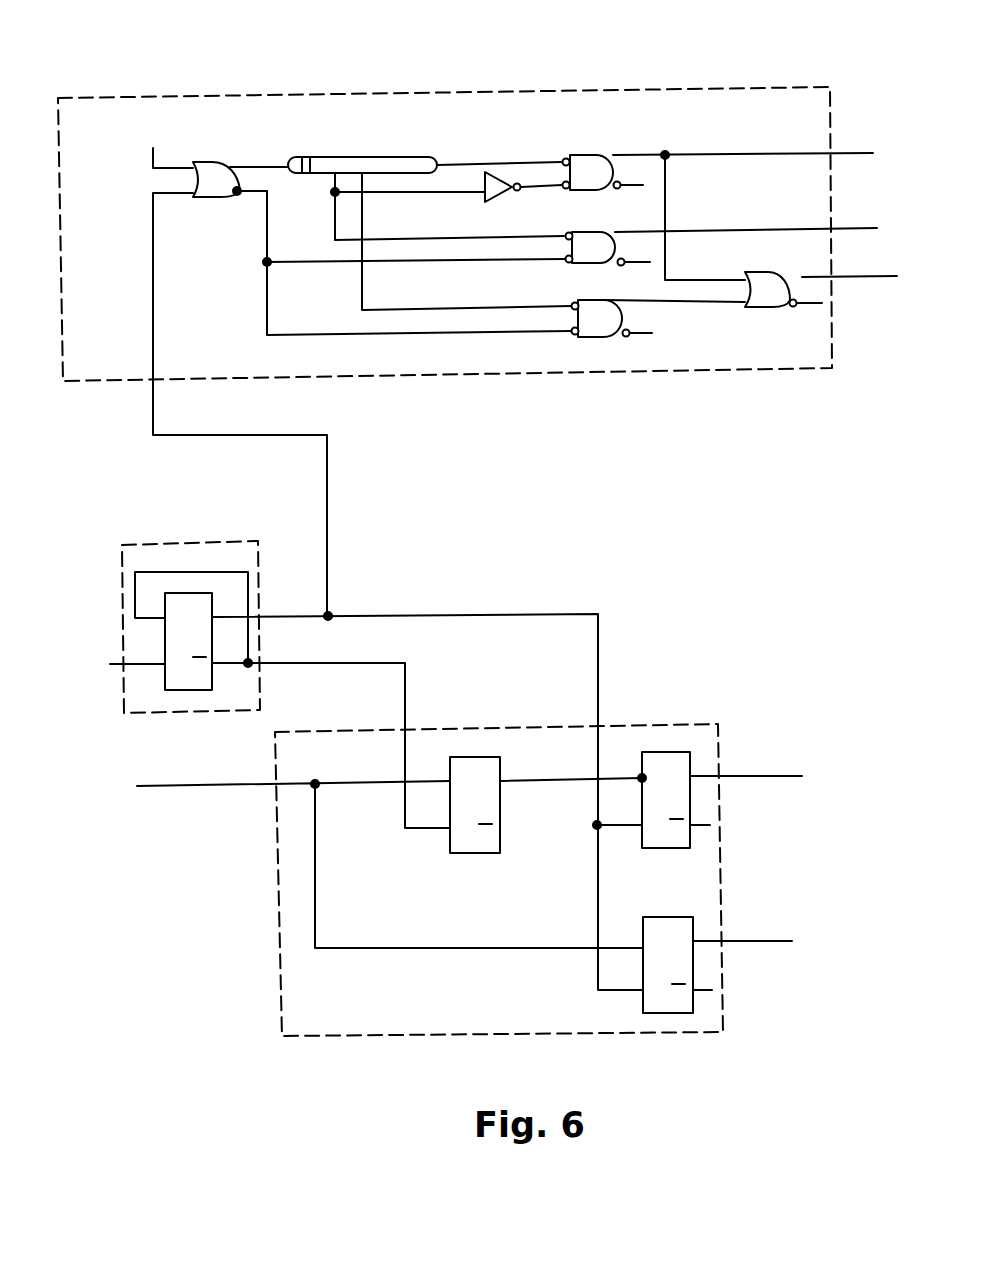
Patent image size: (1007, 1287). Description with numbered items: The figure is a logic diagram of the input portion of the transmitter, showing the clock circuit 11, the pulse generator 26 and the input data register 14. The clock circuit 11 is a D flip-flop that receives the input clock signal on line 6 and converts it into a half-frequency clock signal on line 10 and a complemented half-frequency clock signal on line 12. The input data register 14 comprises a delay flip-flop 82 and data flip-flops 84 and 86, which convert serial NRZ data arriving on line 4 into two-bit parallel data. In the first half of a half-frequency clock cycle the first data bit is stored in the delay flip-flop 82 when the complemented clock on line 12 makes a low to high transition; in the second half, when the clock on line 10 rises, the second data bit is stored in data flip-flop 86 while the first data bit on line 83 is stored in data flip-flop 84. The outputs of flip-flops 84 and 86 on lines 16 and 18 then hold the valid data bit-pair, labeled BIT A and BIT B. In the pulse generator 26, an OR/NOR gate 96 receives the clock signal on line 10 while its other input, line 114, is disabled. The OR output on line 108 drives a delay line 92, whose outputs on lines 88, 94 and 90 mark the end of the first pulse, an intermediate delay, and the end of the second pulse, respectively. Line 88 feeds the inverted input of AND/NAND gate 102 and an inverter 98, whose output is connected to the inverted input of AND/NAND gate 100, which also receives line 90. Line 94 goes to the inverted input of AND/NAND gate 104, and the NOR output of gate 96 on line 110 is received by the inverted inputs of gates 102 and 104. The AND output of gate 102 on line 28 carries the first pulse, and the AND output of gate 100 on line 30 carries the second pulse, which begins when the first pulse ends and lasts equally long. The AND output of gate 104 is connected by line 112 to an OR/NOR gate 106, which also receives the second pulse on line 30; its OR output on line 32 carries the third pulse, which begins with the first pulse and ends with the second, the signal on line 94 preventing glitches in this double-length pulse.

The pulse generator 26 is at (58, 243).
The OR/NOR gate 96 is at (210, 198).
The no pulse line 114 is at (153, 152).
The OR output line 108 is at (252, 165).
The delay line 92 is at (340, 157).
The delay line output line (DL3) 90 is at (528, 160).
The delay line output line (DL1) 88 is at (333, 226).
The inverter 98 is at (492, 203).
The AND/NAND gate 100 is at (593, 155).
The second pulse line 30 is at (636, 156).
The AND/NAND gate 102 is at (623, 205).
The first pulse line 28 is at (688, 228).
The NOR output line 110 is at (265, 238).
The delay line output line (DL2) 94 is at (482, 310).
The AND/NAND gate 104 is at (604, 338).
The connection line 112 is at (708, 303).
The OR/NOR gate 106 is at (762, 308).
The third pulse line 32 is at (808, 277).
The clock circuit 11 is at (163, 543).
The clock signal line 6 is at (120, 666).
The half-frequency clock line 10 is at (298, 616).
The complemented half-frequency clock line 12 is at (296, 666).
The input data register 14 is at (277, 963).
The NRZ data line 4 is at (180, 788).
The delay flip-flop 82 is at (478, 855).
The first bit line 83 is at (545, 786).
The data flip-flop 84 is at (672, 849).
The first output line 16 is at (765, 777).
The data flip-flop 86 is at (674, 916).
The second output line 18 is at (745, 942).